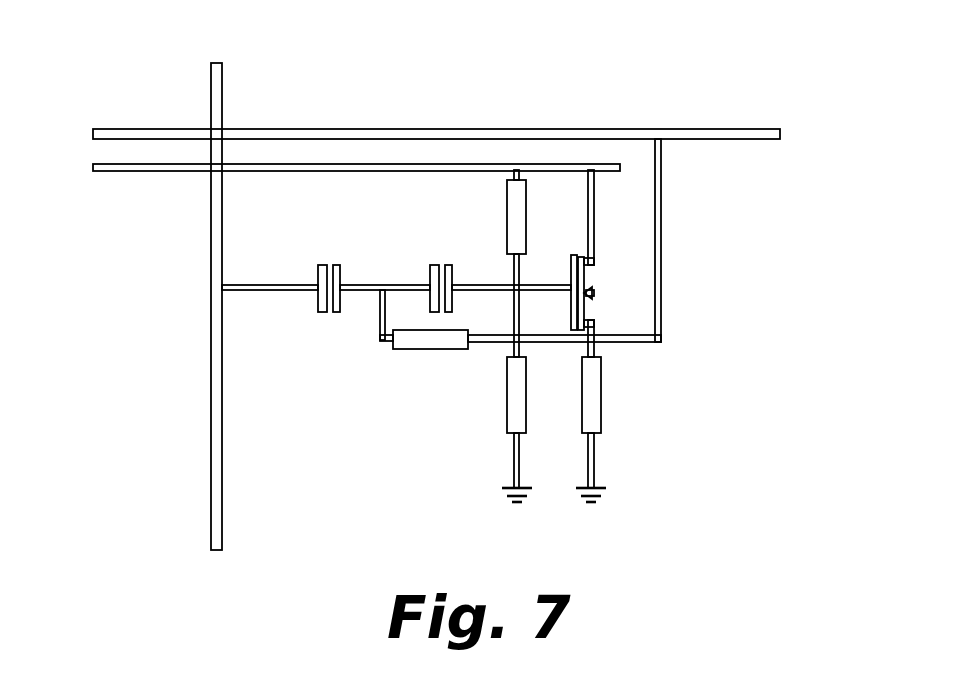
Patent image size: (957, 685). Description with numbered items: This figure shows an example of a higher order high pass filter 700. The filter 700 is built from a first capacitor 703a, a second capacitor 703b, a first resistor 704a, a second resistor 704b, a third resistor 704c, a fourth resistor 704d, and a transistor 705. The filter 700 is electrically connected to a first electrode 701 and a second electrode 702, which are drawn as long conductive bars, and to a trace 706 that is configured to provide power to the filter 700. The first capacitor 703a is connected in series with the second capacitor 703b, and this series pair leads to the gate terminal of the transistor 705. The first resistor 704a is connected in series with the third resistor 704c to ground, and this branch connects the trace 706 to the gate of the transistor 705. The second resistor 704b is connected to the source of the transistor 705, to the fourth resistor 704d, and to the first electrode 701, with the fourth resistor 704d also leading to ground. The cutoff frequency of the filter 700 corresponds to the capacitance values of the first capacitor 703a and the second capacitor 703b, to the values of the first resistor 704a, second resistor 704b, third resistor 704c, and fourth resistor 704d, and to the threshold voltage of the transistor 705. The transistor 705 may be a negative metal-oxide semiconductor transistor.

The higher order high pass filter 700 is at (797, 93).
The first electrode 701 is at (118, 128).
The second electrode 702 is at (211, 80).
The trace 706 is at (117, 173).
The first capacitor 703a is at (311, 263).
The second capacitor 703b is at (419, 262).
The first resistor 704a is at (496, 222).
The second resistor 704b is at (391, 356).
The third resistor 704c is at (494, 408).
The fourth resistor 704d is at (618, 398).
The transistor 705 is at (612, 288).